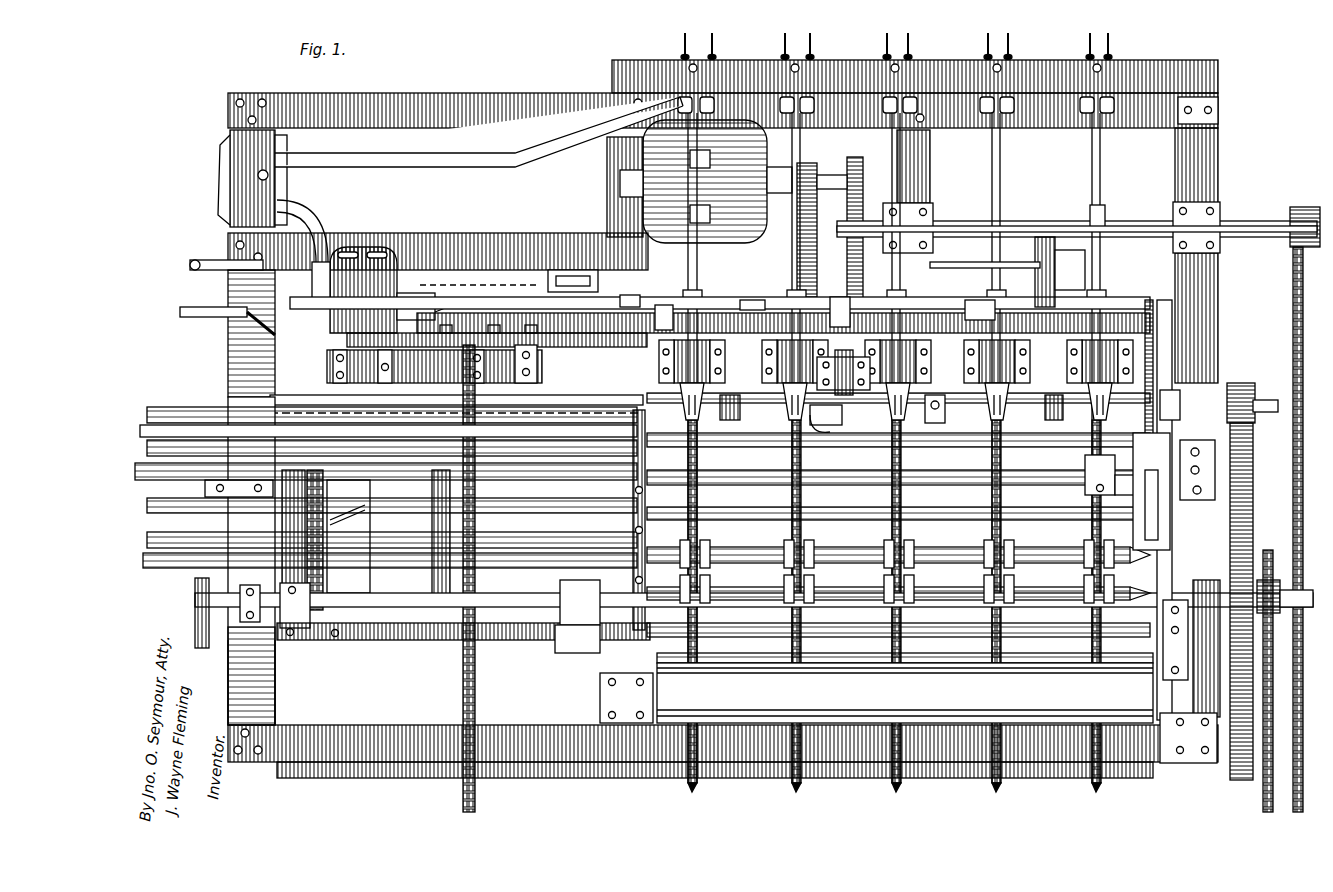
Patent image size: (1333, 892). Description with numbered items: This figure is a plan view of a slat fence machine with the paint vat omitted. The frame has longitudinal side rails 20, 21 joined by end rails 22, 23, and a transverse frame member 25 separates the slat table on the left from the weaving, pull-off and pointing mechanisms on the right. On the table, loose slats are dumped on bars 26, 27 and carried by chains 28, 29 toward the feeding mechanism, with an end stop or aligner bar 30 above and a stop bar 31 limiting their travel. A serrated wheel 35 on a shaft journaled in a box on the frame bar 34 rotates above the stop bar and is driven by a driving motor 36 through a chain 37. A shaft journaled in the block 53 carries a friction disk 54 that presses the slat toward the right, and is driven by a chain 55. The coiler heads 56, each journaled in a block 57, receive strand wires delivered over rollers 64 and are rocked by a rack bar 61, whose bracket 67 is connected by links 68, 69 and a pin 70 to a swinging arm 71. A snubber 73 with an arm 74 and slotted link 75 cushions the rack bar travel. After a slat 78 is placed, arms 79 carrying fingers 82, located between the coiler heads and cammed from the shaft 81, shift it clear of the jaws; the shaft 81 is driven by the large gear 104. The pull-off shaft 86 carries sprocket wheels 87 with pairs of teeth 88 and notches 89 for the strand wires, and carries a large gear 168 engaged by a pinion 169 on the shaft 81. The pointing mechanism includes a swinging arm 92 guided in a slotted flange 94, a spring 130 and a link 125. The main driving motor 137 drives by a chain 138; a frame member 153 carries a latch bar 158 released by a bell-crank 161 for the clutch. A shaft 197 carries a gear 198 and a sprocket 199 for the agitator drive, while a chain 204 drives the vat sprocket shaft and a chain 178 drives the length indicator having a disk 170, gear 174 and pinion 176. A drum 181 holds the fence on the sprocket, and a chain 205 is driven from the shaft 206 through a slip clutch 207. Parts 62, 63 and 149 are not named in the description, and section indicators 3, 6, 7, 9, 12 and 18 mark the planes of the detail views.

The longitudinal side rail 20 is at (497, 97).
The longitudinal side rail 21 is at (407, 747).
The end rail 22 is at (253, 680).
The end rail 23 is at (1207, 183).
The transverse frame member 25 is at (605, 653).
The bar 26 is at (343, 607).
The bar 27 is at (555, 635).
The chain 28 is at (313, 527).
The chain 29 is at (560, 586).
The end stop or aligner bar 30 is at (650, 543).
The stop bar 31 is at (232, 402).
The frame bar 34 is at (487, 358).
The serrated wheel 35 is at (565, 413).
The driving motor 36 is at (354, 290).
The chain 37 is at (445, 330).
The block 53 is at (843, 372).
The friction disk 54 is at (815, 425).
The chain 55 is at (697, 320).
The coiler head 56 is at (1003, 440).
The block 57 is at (898, 371).
The rack bar 61 is at (977, 303).
The belt strip 62 is at (1003, 150).
The belt strip 63 is at (1105, 150).
The roller 64 is at (1082, 105).
The bracket 67 is at (885, 305).
The link 68 is at (627, 300).
The link 69 is at (663, 320).
The pin 70 is at (842, 297).
The swinging arm 71 is at (385, 313).
The shock absorber or snubber 73 is at (572, 276).
The arm 74 is at (530, 330).
The link 75 is at (493, 330).
The slat 78 is at (922, 410).
The arm 79 is at (1005, 470).
The shaft 81 is at (1268, 400).
The finger or projection 82 is at (1055, 410).
The pull-off shaft 86 is at (950, 605).
The sprocket wheel 87 is at (1090, 572).
The pairs of teeth 88 is at (885, 578).
The notch 89 is at (993, 545).
The swinging arm 92 is at (1185, 473).
The flange 94 is at (1160, 527).
The large gear 104 is at (945, 470).
The link 125 is at (1093, 438).
The spring 130 is at (1157, 365).
The main driving motor 137 is at (699, 181).
The chain 138 is at (840, 158).
The bearing 149 is at (1172, 400).
The frame member 153 is at (1013, 262).
The latch bar 158 is at (1097, 217).
The bell-crank 161 is at (1070, 253).
The large gear 168 is at (1257, 533).
The pinion 169 is at (1245, 395).
The disk 170 is at (1107, 625).
The gear 174 is at (1187, 713).
The pinion 176 is at (1180, 577).
The chain 178 is at (1150, 575).
The drum 181 is at (905, 688).
The shaft 197 is at (1047, 225).
The gear 198 is at (858, 160).
The sprocket 199 is at (1292, 212).
The chain 204 is at (1265, 805).
The chain 205 is at (475, 800).
The shaft 206 is at (533, 527).
The slip clutch 207 is at (447, 582).
The section line 3 is at (1263, 247).
The section line 6 is at (995, 688).
The section line 7 is at (1048, 470).
The section line 9 is at (626, 375).
The section line 12 is at (1085, 688).
The section line 18 is at (523, 289).